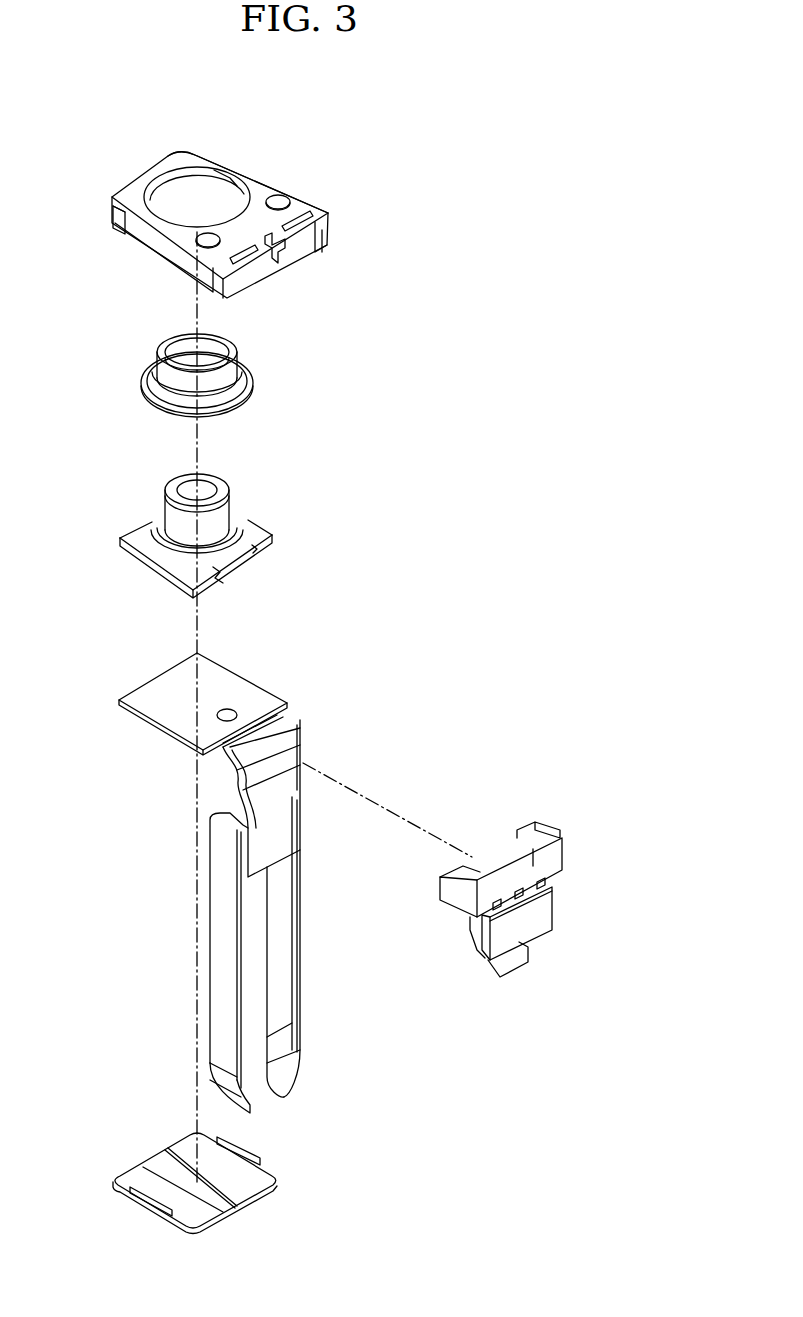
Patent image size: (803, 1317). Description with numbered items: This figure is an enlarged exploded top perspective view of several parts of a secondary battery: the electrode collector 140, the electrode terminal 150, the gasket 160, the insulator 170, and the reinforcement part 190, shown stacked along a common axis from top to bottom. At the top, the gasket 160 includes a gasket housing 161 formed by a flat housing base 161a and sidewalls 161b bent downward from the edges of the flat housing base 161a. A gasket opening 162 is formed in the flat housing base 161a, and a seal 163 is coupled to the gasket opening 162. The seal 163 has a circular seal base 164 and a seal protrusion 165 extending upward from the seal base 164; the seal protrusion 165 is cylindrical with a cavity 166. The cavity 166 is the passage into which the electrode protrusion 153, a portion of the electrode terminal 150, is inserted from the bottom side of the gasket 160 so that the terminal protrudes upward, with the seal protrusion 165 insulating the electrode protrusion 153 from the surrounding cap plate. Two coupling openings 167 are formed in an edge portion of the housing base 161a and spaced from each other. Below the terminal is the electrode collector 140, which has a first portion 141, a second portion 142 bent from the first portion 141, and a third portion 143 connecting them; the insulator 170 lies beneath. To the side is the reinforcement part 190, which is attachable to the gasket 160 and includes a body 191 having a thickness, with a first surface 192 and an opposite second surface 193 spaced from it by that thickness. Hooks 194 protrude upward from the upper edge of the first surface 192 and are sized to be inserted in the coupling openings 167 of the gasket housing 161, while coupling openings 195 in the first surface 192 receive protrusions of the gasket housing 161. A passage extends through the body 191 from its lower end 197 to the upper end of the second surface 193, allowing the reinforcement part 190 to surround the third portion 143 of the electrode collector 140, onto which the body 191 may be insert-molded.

The electrode collector 140 is at (305, 615).
The first portion 141 is at (238, 690).
The second portion 142 is at (282, 966).
The third portion 143 is at (294, 730).
The electrode terminal 150 is at (290, 530).
The electrode protrusion 153 is at (224, 510).
The gasket 160 is at (418, 253).
The gasket housing 161 is at (335, 248).
The flat housing base 161a is at (200, 155).
The sidewalls 161b is at (303, 253).
The gasket opening 162 is at (182, 216).
The seal 163 is at (296, 368).
The seal base 164 is at (227, 405).
The seal protrusion 165 is at (172, 380).
The cavity 166 is at (190, 348).
The coupling openings 167 is at (302, 203).
The insulator 170 is at (258, 1180).
The reinforcement part 190 is at (573, 849).
The body 191 is at (450, 875).
The first surface 192 is at (534, 913).
The second surface 193 is at (470, 920).
The hooks 194 is at (533, 835).
The coupling openings 195 is at (553, 885).
The lower end 197 is at (513, 963).